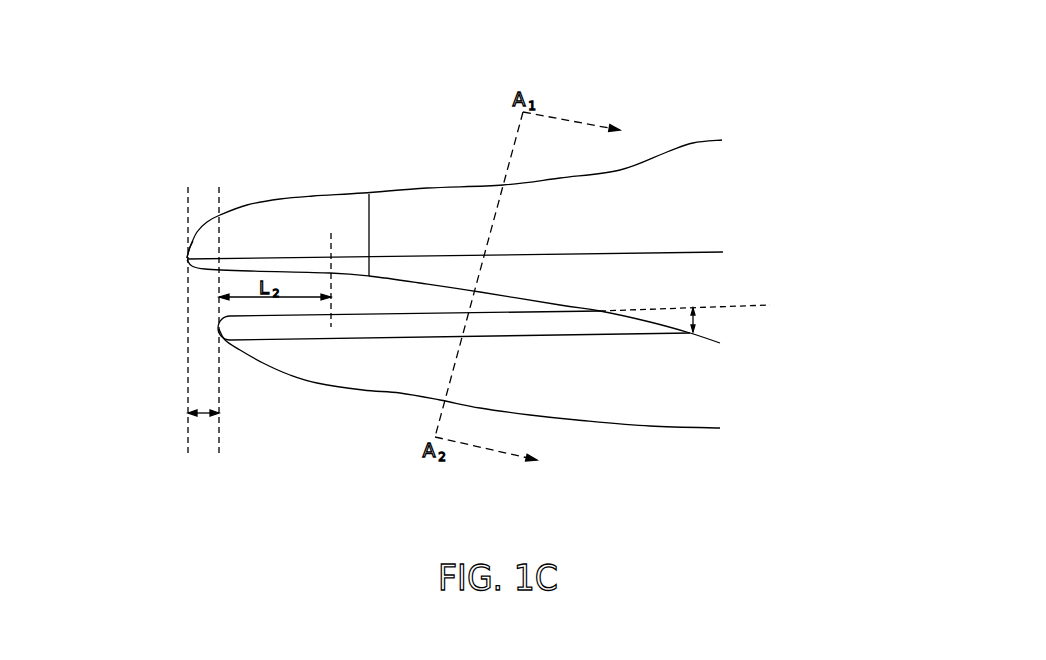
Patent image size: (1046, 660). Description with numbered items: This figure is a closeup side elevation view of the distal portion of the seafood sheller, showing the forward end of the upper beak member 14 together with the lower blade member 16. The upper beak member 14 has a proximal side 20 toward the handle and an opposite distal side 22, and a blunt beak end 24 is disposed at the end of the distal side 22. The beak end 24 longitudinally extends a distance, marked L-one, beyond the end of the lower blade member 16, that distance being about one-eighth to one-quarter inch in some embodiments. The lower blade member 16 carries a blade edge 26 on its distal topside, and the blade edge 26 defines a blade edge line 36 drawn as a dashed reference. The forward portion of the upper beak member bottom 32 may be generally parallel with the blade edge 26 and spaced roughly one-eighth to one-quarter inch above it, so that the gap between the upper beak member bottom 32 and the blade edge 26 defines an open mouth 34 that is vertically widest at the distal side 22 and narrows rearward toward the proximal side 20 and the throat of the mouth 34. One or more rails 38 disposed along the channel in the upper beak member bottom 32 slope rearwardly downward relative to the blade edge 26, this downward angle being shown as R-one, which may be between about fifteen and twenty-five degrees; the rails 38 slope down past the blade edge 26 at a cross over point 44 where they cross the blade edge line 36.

The upper beak member 14 is at (390, 205).
The lower blade member 16 is at (313, 357).
The proximal side 20 is at (702, 131).
The distal side 22 is at (200, 152).
The beak end 24 is at (196, 243).
The blade edge 26 is at (383, 328).
The upper beak member bottom 32 is at (243, 268).
The mouth 34 is at (162, 301).
The blade edge line 36 is at (756, 310).
The rail 38 is at (498, 293).
The cross over point 44 is at (607, 286).